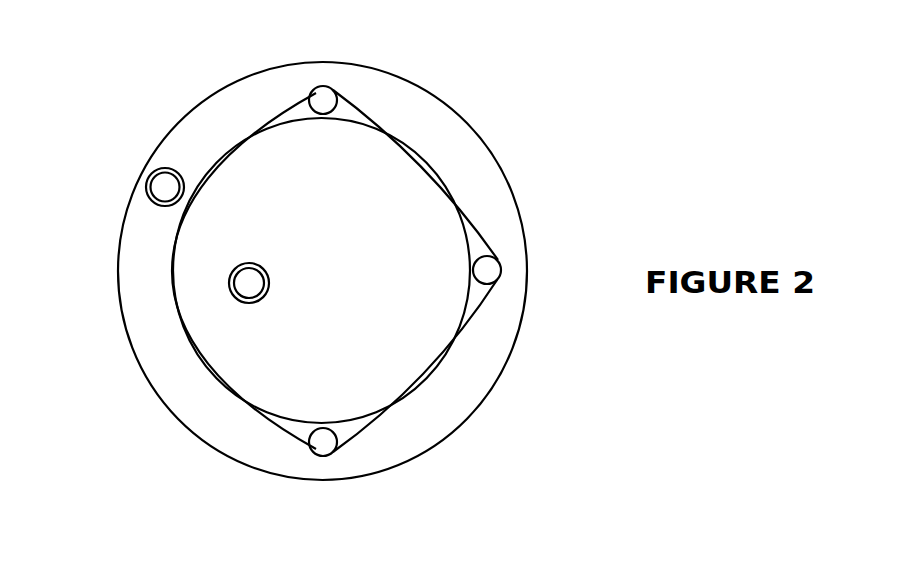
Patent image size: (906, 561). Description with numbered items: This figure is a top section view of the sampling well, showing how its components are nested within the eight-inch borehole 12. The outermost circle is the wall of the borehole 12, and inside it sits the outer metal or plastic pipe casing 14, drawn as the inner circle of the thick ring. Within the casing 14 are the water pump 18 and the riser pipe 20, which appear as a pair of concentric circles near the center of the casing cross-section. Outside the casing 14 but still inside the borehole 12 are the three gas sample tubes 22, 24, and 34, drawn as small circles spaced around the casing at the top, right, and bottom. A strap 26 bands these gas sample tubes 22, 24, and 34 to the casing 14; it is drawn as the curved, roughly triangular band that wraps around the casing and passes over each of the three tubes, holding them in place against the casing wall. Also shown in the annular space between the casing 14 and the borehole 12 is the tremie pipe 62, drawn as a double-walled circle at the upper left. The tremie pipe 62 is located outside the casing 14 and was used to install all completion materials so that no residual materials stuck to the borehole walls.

The borehole 12 is at (492, 397).
The pipe casing 14 is at (217, 382).
The water pump 18 is at (233, 275).
The riser pipe 20 is at (236, 292).
The gas sample tube 22 is at (500, 268).
The gas sample tube 24 is at (315, 450).
The strap 26 is at (487, 305).
The gas sample tube 34 is at (335, 98).
The tremie pipe 62 is at (147, 186).